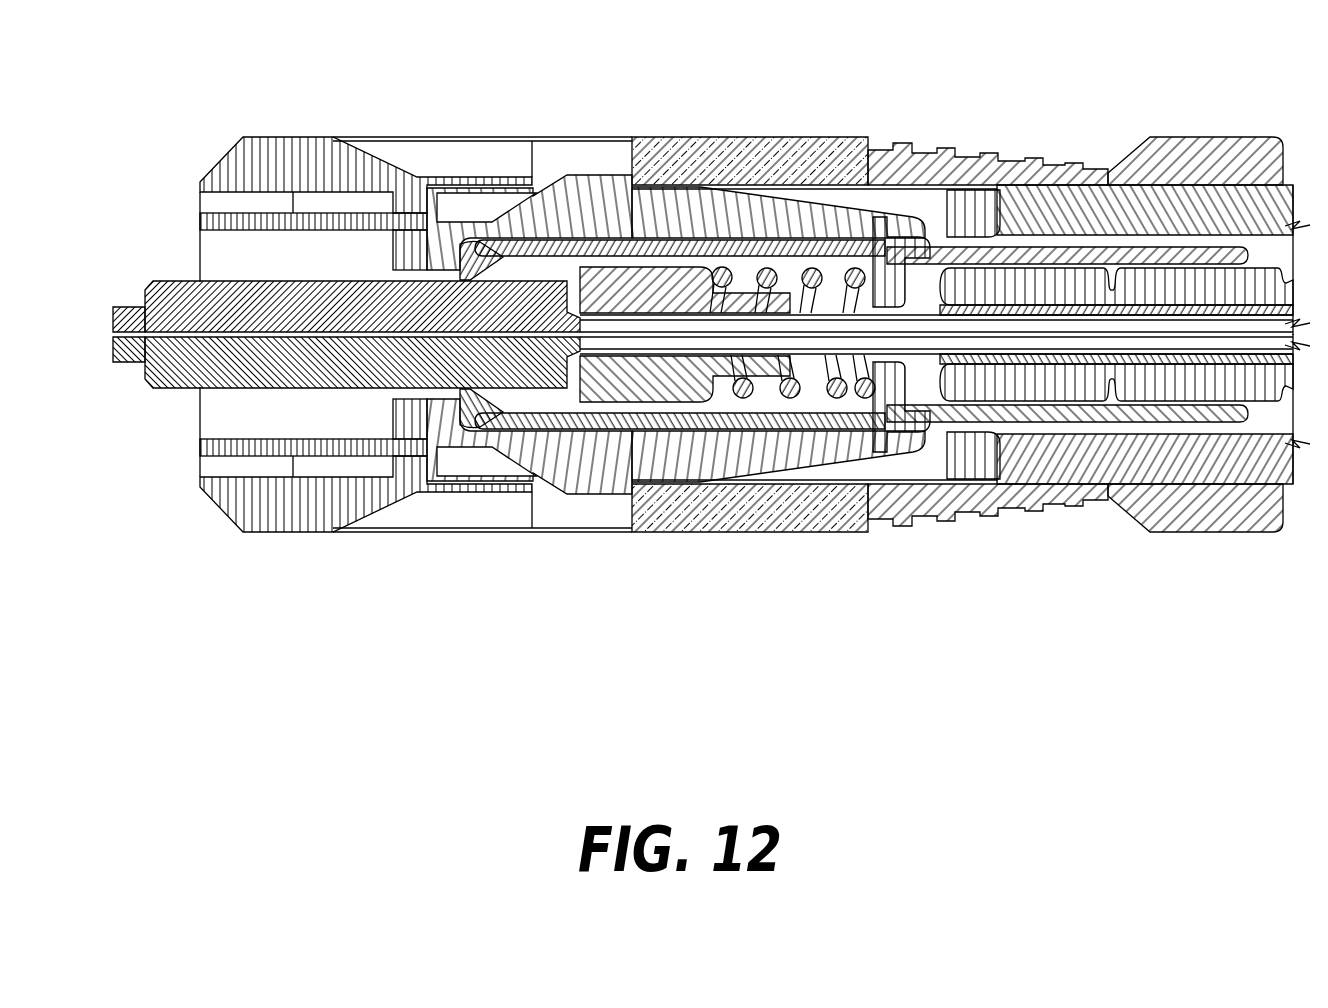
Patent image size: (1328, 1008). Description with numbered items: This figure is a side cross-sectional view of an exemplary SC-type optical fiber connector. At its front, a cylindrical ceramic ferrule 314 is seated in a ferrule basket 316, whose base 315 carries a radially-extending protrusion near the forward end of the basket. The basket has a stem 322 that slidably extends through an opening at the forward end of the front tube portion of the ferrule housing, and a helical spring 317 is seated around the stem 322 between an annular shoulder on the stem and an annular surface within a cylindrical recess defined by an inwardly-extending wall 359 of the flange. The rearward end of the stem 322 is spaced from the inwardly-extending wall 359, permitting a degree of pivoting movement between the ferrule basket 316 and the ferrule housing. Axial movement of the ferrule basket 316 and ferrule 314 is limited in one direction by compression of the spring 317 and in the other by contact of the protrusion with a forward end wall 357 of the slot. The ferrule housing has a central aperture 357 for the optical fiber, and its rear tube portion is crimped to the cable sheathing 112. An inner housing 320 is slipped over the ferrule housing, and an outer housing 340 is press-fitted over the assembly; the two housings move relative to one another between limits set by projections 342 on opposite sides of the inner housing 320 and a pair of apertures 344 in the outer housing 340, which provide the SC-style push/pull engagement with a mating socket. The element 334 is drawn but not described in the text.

The cable sheathing 112 is at (1047, 390).
The ferrule 314 is at (188, 377).
The base 315 is at (593, 382).
The ferrule basket 316 is at (515, 403).
The helical spring 317 is at (838, 399).
The inner housing 320 is at (705, 222).
The stem 322 is at (745, 397).
The conductor tip 334 is at (108, 350).
The outer housing 340 is at (847, 158).
The projections 342 is at (608, 182).
The apertures 344 is at (585, 153).
The forward end wall 357 is at (883, 247).
The inwardly-extending wall 359 is at (878, 390).